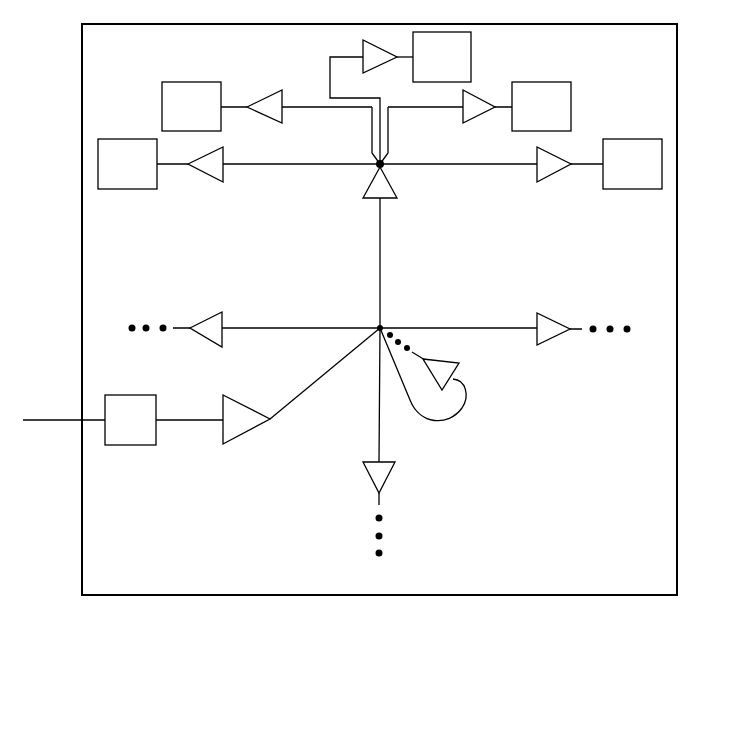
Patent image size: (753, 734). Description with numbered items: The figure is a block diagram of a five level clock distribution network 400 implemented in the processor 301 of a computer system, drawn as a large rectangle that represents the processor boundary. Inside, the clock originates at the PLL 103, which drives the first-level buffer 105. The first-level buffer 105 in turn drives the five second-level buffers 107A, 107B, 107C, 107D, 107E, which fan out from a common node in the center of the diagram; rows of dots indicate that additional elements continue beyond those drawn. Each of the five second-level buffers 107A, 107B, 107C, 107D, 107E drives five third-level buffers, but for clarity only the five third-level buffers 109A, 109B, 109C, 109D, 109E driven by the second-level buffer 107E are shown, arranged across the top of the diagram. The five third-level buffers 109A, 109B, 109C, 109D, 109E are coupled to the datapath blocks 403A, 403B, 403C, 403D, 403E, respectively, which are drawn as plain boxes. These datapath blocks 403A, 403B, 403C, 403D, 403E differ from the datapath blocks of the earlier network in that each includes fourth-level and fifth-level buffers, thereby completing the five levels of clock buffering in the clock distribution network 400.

The clock distribution network 400 is at (117, 265).
The processor 301 is at (678, 395).
The PLL 103 is at (127, 445).
The first-level buffer 105 is at (242, 433).
The second-level buffer 107A is at (205, 318).
The second-level buffer 107B is at (396, 475).
The second-level buffer 107C is at (459, 366).
The second-level buffer 107D is at (553, 345).
The second-level buffer 107E is at (398, 180).
The third-level buffer 109A is at (205, 182).
The third-level buffer 109B is at (258, 123).
The third-level buffer 109C is at (363, 52).
The third-level buffer 109D is at (470, 123).
The third-level buffer 109E is at (553, 182).
The datapath block 403A is at (118, 189).
The datapath block 403B is at (162, 93).
The datapath block 403C is at (473, 42).
The datapath block 403D is at (571, 93).
The datapath block 403E is at (634, 184).